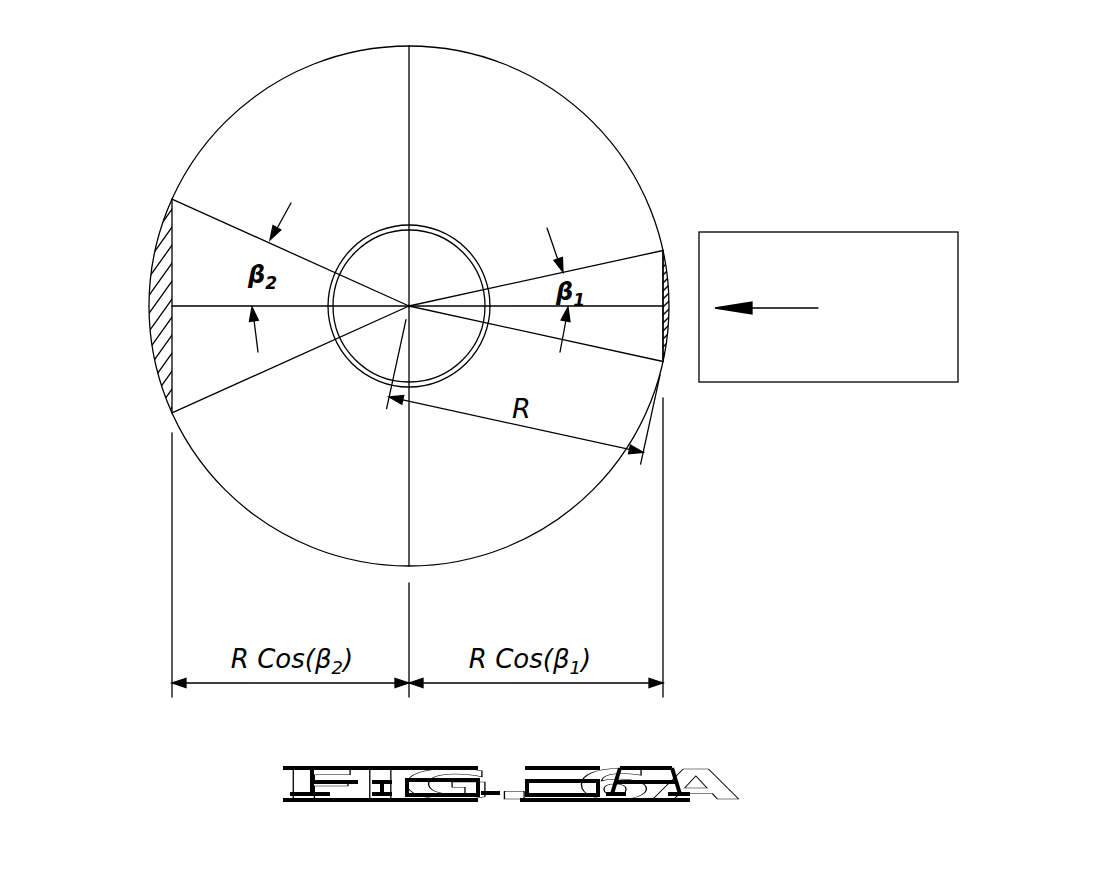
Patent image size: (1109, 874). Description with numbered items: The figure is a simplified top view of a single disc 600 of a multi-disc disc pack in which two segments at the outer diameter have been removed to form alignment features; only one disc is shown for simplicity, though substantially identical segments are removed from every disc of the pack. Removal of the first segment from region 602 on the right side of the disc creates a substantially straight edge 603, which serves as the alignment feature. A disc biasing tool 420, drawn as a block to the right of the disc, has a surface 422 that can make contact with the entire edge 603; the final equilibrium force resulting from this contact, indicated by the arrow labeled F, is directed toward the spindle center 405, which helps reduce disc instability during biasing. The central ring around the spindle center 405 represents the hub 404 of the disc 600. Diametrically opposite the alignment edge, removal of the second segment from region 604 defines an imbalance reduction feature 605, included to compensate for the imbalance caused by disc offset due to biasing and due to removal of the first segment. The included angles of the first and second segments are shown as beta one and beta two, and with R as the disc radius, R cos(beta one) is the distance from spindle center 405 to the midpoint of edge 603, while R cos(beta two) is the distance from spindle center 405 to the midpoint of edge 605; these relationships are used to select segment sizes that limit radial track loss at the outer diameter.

The disc 600 is at (533, 74).
The first segment region 602 is at (668, 256).
The substantially straight edge 603 is at (659, 286).
The second segment region 604 is at (150, 338).
The imbalance reduction feature 605 is at (175, 358).
The disc hub 404 is at (427, 250).
The spindle center 405 is at (403, 292).
The biasing tool 420 is at (833, 232).
The surface of biasing tool 422 is at (687, 372).